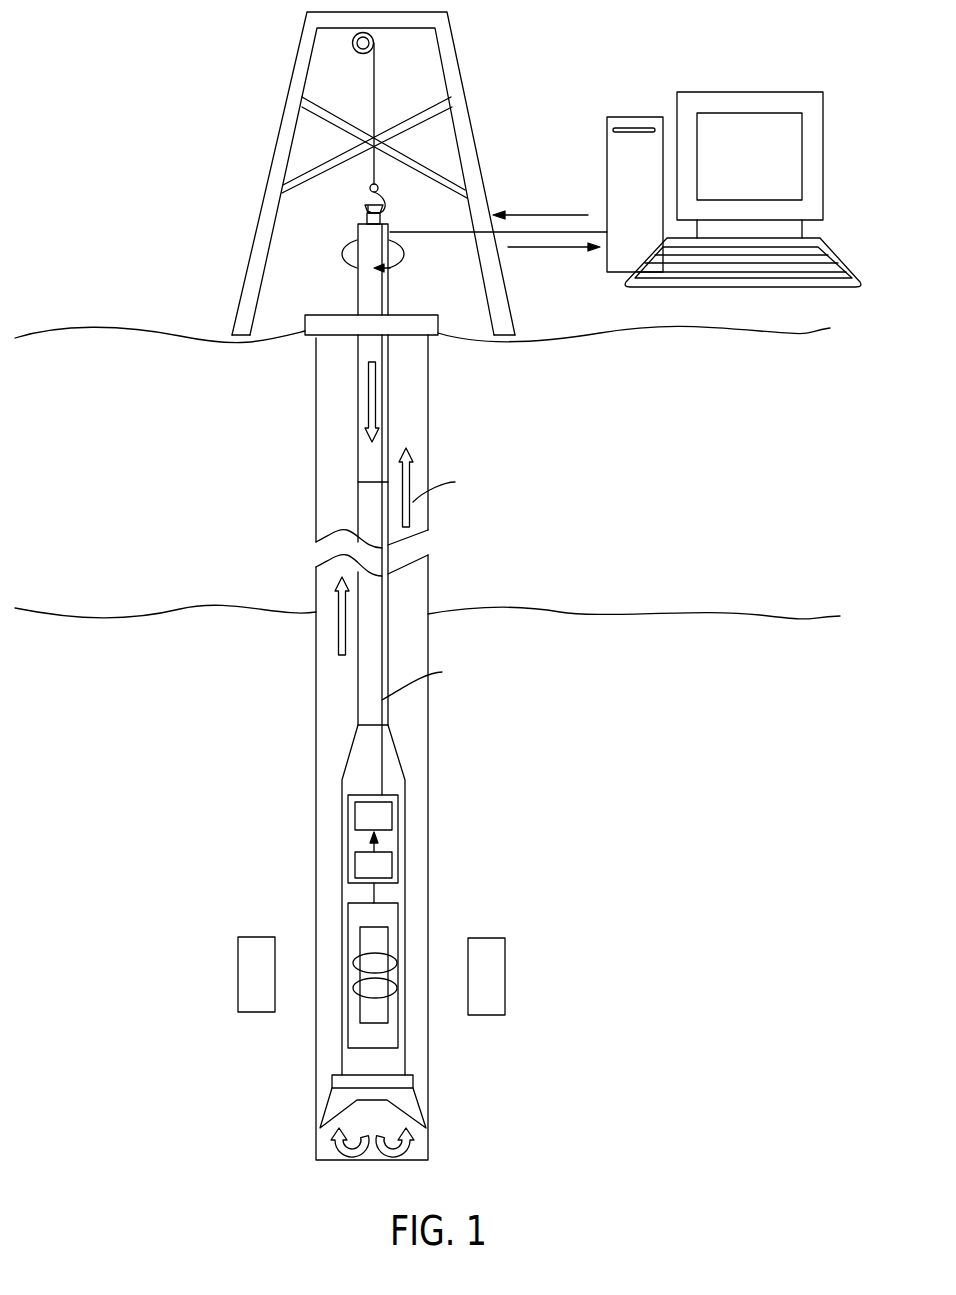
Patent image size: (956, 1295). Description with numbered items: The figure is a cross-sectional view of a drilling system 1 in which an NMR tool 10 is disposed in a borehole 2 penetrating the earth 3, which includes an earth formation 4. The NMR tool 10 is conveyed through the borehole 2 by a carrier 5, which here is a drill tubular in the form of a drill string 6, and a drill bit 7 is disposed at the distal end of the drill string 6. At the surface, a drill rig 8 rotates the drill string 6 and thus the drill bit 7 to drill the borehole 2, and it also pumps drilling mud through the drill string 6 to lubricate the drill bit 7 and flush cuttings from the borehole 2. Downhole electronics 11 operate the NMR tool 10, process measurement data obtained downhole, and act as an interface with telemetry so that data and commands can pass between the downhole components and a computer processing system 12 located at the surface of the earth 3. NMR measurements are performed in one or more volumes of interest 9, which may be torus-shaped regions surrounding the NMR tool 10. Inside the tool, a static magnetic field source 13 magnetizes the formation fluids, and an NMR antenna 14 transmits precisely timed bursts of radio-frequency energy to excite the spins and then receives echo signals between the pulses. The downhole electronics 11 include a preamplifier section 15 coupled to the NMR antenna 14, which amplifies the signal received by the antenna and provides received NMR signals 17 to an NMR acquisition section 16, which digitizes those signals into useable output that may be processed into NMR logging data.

The drilling system 1 is at (300, 32).
The borehole 2 is at (325, 503).
The earth 3 is at (682, 408).
The earth formation 4 is at (733, 657).
The carrier 5 is at (358, 472).
The drill string 6 is at (358, 712).
The drill bit 7 is at (335, 1111).
The drill rig 8 is at (225, 262).
The volume of interest 9 is at (262, 990).
The NMR tool 10 is at (348, 917).
The downhole electronics 11 is at (348, 825).
The computer processing system 12 is at (630, 117).
The static magnetic field source 13 is at (388, 937).
The NMR antenna 14 is at (393, 992).
The preamplifier section 15 is at (392, 877).
The NMR acquisition section 16 is at (392, 817).
The received NMR signals 17 is at (377, 848).